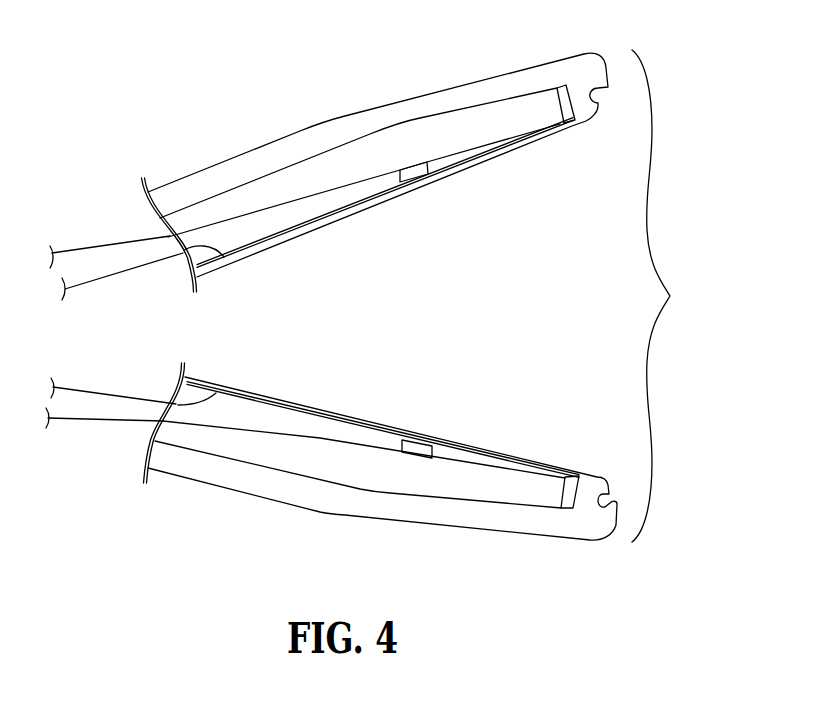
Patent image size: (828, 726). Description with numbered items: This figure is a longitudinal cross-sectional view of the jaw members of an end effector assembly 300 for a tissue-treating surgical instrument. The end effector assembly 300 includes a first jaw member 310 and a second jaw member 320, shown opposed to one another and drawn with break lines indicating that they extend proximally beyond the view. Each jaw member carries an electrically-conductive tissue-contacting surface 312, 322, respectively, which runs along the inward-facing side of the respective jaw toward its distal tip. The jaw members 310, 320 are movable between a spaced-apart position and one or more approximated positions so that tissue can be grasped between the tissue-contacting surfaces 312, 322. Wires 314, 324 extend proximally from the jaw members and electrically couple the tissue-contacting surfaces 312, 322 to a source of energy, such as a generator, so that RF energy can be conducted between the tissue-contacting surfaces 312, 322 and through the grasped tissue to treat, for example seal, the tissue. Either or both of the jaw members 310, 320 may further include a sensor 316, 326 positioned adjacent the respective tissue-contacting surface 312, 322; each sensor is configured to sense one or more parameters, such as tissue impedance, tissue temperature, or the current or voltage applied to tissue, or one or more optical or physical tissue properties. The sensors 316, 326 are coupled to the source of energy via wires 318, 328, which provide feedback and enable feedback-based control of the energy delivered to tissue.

The end effector assembly 300 is at (674, 296).
The first jaw member 310 is at (378, 90).
The electrically-conductive tissue-contacting surface 312 is at (530, 147).
The wire 314 is at (108, 277).
The sensor 316 is at (417, 175).
The wire 318 is at (259, 214).
The second jaw member 320 is at (382, 527).
The electrically-conductive tissue-contacting surface 322 is at (520, 457).
The wire 324 is at (122, 396).
The sensor 326 is at (418, 448).
The wire 328 is at (292, 436).